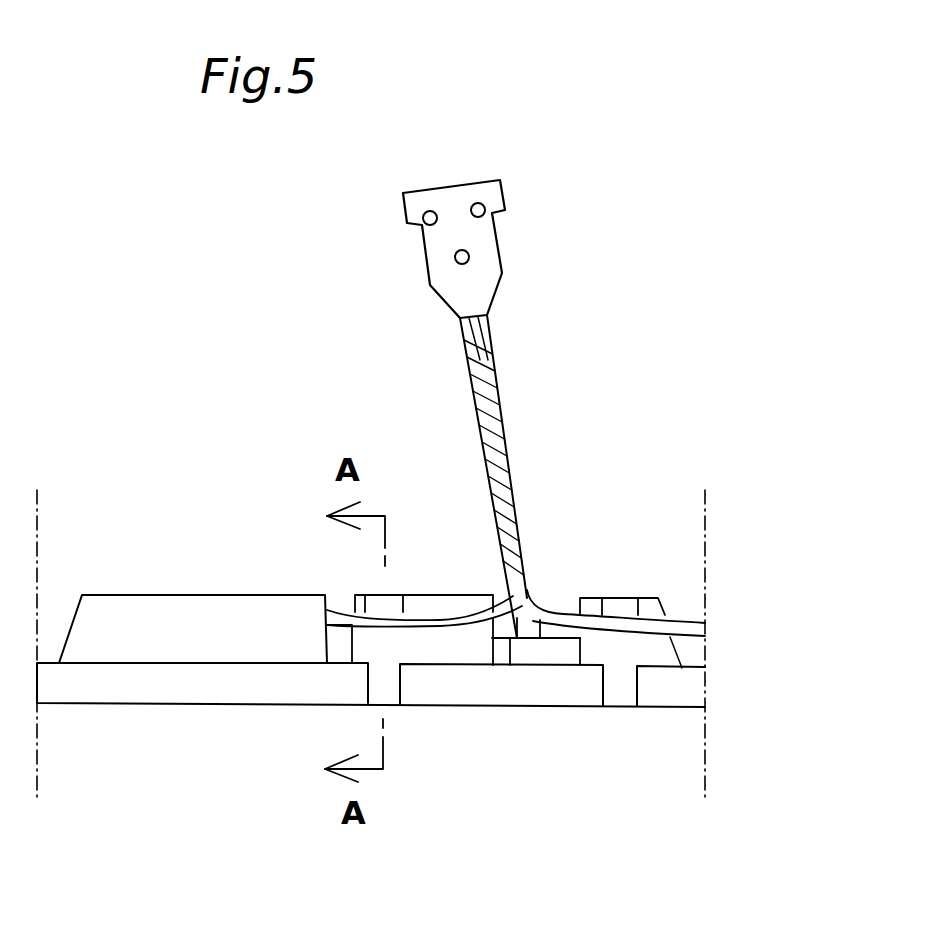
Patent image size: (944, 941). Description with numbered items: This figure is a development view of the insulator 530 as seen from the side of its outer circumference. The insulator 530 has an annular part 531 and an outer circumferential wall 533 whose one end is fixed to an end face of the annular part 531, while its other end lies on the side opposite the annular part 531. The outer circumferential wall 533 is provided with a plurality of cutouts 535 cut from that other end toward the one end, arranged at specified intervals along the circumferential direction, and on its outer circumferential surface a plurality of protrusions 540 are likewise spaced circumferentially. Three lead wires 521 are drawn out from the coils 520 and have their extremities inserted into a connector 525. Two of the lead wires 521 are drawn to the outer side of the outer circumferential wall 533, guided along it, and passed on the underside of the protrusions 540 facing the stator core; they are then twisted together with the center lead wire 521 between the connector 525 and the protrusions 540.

The coil 520 is at (563, 652).
The lead wire 521 is at (682, 628).
The connector 525 is at (487, 248).
The insulator 530 is at (192, 567).
The annular part 531 is at (155, 685).
The outer circumferential wall 533 is at (138, 633).
The cutout 535 is at (310, 640).
The protrusion 540 is at (390, 603).